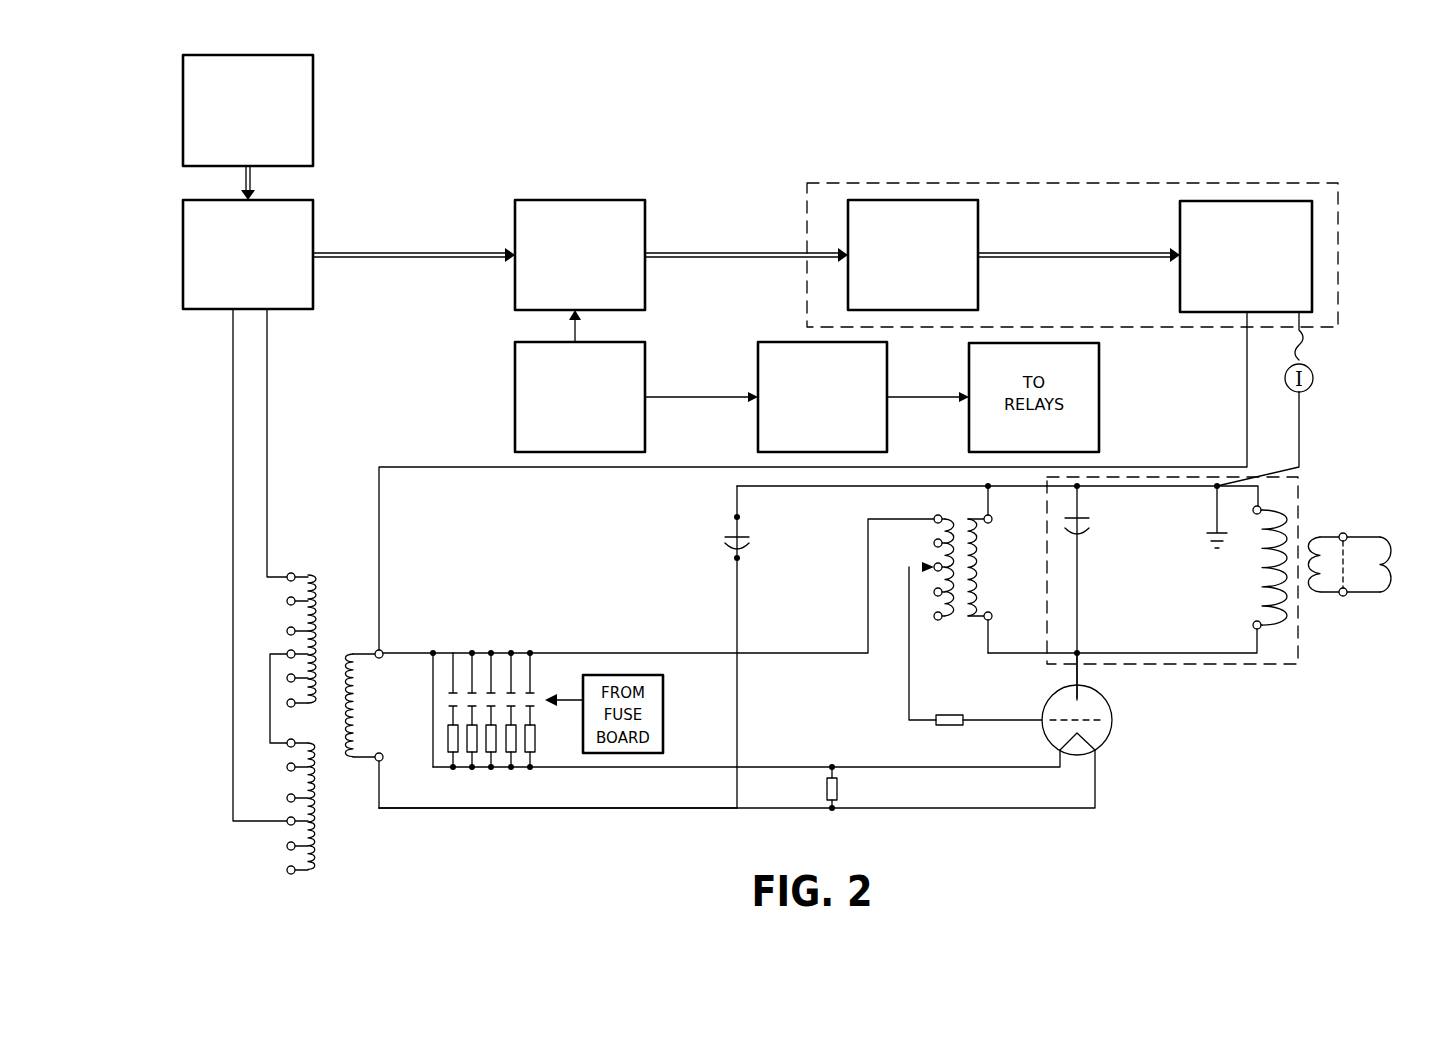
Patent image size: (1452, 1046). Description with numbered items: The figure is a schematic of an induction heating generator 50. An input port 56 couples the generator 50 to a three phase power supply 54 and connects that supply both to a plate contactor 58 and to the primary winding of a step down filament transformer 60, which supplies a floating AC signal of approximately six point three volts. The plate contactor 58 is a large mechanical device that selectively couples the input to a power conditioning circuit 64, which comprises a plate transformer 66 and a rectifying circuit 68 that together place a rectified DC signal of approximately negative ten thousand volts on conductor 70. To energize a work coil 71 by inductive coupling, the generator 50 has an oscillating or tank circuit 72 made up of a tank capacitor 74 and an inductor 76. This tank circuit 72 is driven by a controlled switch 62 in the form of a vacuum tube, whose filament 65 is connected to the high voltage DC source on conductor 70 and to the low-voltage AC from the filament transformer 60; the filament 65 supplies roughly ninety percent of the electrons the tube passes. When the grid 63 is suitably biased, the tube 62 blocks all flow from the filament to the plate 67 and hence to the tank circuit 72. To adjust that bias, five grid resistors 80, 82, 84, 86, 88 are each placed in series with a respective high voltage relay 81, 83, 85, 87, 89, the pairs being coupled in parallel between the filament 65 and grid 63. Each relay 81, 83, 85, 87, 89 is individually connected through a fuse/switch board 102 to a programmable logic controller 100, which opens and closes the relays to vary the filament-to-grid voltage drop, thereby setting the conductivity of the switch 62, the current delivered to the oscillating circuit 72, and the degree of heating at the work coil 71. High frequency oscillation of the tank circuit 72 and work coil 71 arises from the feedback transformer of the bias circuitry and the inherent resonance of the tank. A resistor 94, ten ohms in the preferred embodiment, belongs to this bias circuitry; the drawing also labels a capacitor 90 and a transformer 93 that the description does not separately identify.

The induction heating generator 50 is at (1296, 787).
The three phase power supply 54 is at (313, 57).
The input port 56 is at (313, 200).
The plate contactor 58 is at (645, 200).
The step down filament transformer 60 is at (331, 860).
The controlled switch 62 is at (1120, 720).
The grid 63 is at (1042, 718).
The power conditioning circuit 64 is at (1350, 170).
The filament 65 is at (1082, 738).
The plate transformer 66 is at (978, 200).
The plate 67 is at (1078, 688).
The rectifying circuit 68 is at (1312, 200).
The conductor 70 is at (1247, 380).
The work coil 71 is at (1378, 535).
The oscillating circuit 72 is at (1308, 675).
The tank capacitor 74 is at (1088, 518).
The inductor 76 is at (1278, 507).
The grid resistor 80 is at (451, 740).
The bias control switch 81 is at (451, 690).
The grid resistor 82 is at (472, 740).
The bias control switch 83 is at (471, 690).
The grid resistor 84 is at (491, 740).
The bias control switch 85 is at (491, 690).
The grid resistor 86 is at (511, 740).
The bias control switch 87 is at (511, 690).
The grid resistor 88 is at (531, 740).
The bias control switch 89 is at (531, 690).
The capacitor 90 is at (730, 535).
The feedback transformer 93 is at (955, 637).
The resistor 94 is at (948, 726).
The controller 100 is at (645, 342).
The fuse/switch board 102 is at (887, 342).